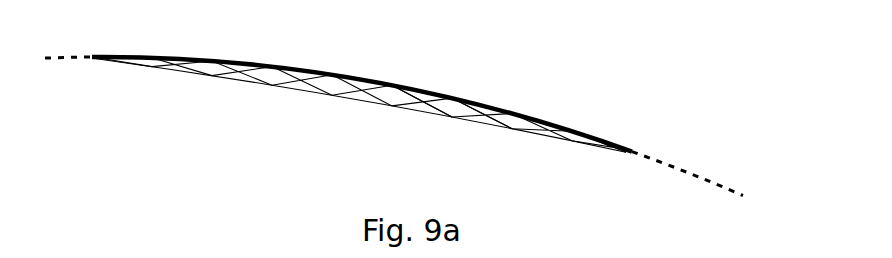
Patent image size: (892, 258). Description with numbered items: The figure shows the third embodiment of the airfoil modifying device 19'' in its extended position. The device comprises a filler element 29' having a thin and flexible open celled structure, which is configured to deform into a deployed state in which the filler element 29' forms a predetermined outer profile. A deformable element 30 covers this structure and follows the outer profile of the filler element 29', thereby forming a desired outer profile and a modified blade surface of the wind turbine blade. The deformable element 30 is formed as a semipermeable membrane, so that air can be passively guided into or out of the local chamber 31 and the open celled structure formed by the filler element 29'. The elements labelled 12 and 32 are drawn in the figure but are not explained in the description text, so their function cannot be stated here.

The blade structural member 12 is at (362, 103).
The local chamber 31 is at (322, 73).
The diagonal strut 32 is at (446, 95).
The deformable element 30 is at (378, 102).
The filler element 29' is at (515, 151).
The airfoil modifying device 19'' is at (359, 118).